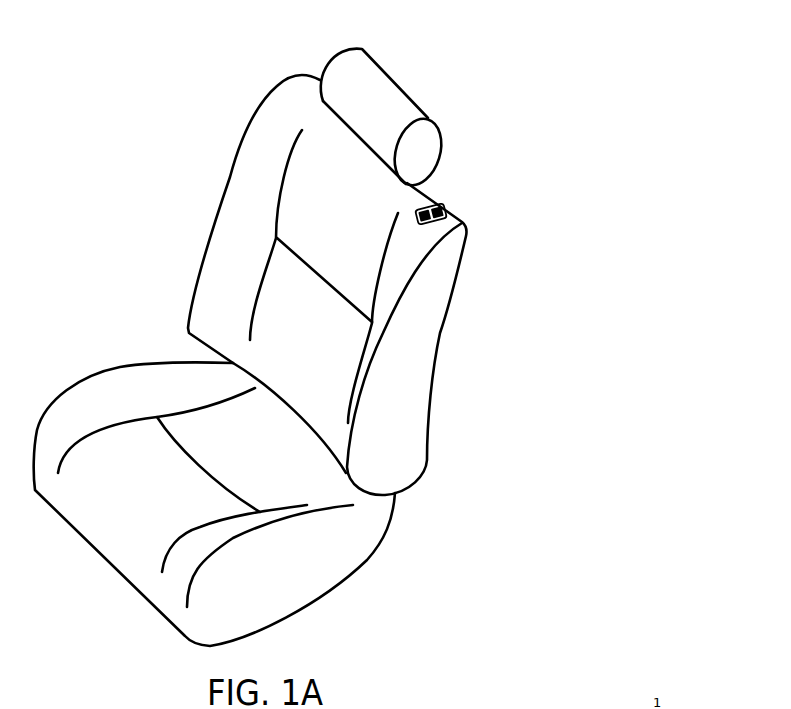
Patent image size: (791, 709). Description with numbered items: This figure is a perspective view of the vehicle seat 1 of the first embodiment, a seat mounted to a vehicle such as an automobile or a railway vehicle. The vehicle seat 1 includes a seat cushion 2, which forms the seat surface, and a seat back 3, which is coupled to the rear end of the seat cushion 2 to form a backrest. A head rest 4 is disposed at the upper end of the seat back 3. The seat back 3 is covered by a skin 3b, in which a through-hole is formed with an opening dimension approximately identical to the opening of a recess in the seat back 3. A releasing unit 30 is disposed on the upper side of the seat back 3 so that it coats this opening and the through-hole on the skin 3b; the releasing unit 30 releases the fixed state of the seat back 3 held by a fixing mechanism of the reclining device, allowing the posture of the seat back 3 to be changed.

The vehicle seat 1 is at (585, 107).
The seat cushion 2 is at (332, 575).
The seat back 3 is at (232, 97).
The skin 3b is at (237, 218).
The head rest 4 is at (387, 88).
The releasing unit 30 is at (444, 203).